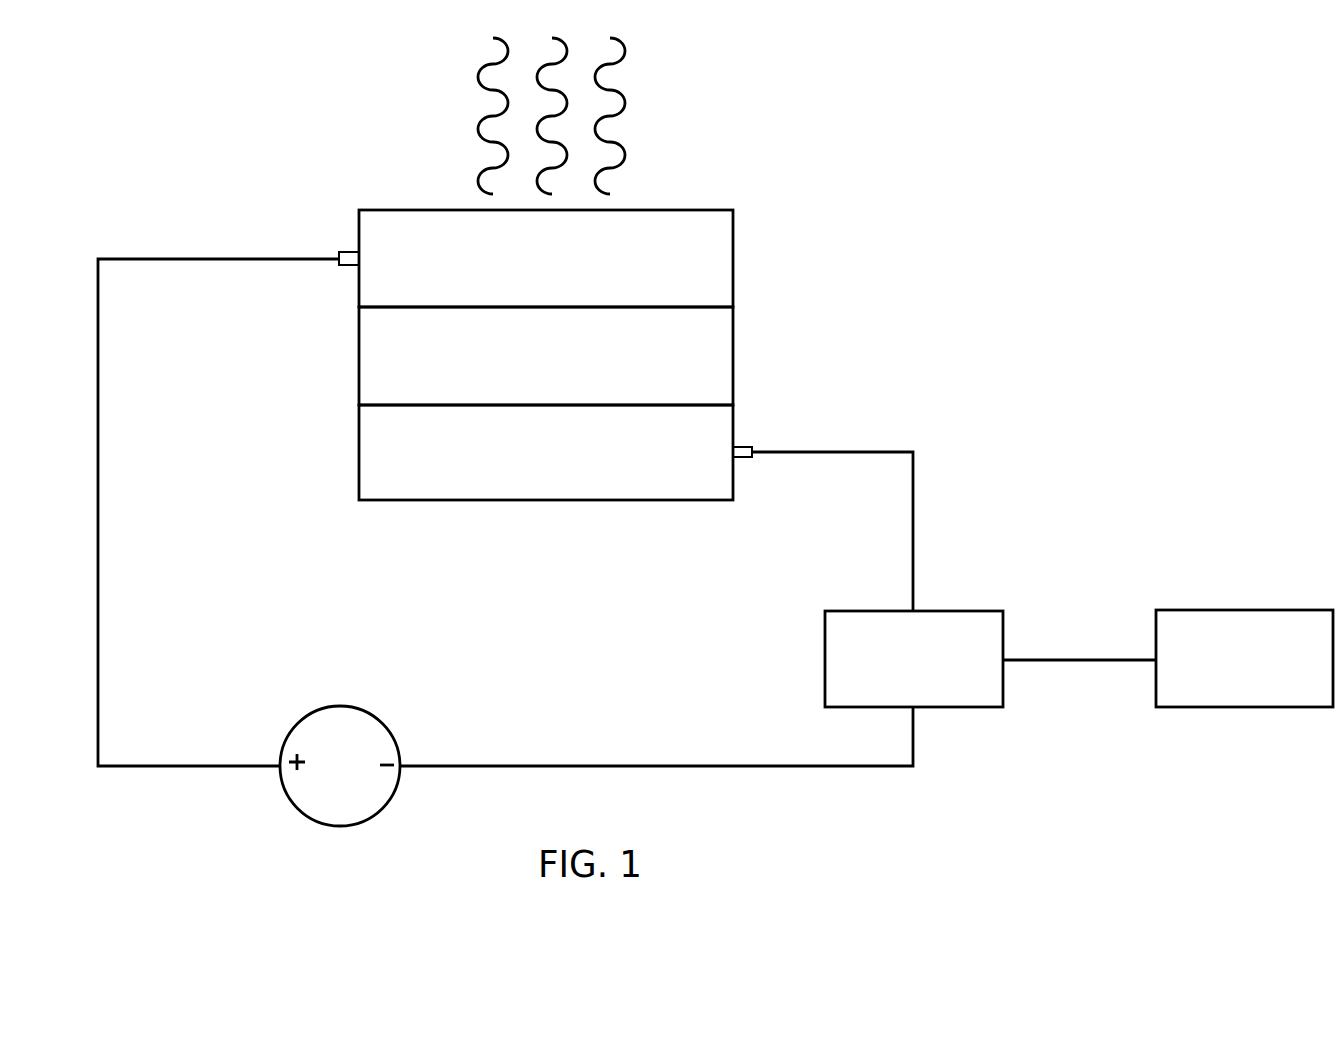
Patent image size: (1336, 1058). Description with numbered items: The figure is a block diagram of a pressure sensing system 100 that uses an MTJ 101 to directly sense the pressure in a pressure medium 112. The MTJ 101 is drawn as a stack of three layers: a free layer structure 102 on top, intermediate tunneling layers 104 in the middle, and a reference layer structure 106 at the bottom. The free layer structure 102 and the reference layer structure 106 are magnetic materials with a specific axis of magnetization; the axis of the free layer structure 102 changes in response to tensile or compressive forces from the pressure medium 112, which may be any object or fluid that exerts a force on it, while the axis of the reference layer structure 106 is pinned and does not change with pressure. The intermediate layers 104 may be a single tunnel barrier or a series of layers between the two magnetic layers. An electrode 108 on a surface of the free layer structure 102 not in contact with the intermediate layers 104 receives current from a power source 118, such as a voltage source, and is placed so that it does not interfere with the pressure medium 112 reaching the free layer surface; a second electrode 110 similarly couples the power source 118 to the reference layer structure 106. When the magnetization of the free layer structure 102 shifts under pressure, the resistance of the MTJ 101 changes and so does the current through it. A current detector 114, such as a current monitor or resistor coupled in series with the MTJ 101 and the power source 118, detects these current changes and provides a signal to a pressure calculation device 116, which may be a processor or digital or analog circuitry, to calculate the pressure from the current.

The pressure sensing system 100 is at (848, 116).
The MTJ 101 is at (545, 402).
The free layer structure 102 is at (733, 258).
The intermediate tunneling layers 104 is at (733, 355).
The reference layer structure 106 is at (498, 452).
The electrode 108 is at (340, 252).
The electrode 110 is at (740, 457).
The pressure medium 112 is at (622, 100).
The current detector 114 is at (825, 662).
The pressure calculation device 116 is at (1245, 707).
The power source 118 is at (340, 705).